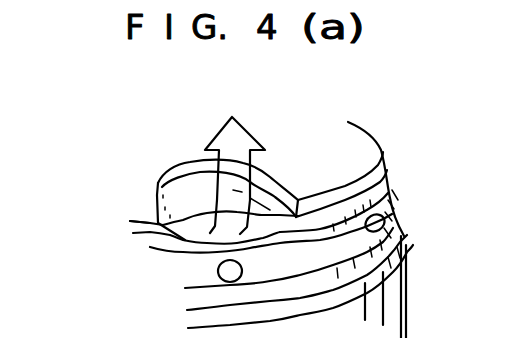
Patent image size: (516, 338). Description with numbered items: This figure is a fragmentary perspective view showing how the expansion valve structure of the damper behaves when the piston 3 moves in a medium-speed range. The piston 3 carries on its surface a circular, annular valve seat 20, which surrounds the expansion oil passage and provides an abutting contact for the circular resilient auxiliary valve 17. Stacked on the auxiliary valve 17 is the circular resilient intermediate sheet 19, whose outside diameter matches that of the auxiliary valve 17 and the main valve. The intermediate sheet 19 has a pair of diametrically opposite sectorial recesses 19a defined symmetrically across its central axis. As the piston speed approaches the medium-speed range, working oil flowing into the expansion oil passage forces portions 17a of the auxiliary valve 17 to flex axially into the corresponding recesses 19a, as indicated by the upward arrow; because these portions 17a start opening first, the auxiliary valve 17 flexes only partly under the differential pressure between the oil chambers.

The piston 3 is at (383, 306).
The auxiliary valve 17 is at (149, 233).
The portions of the auxiliary valve 17a is at (157, 203).
The intermediate sheet 19 is at (348, 142).
The sectorial recesses 19a is at (187, 168).
The valve seat 20 is at (387, 190).